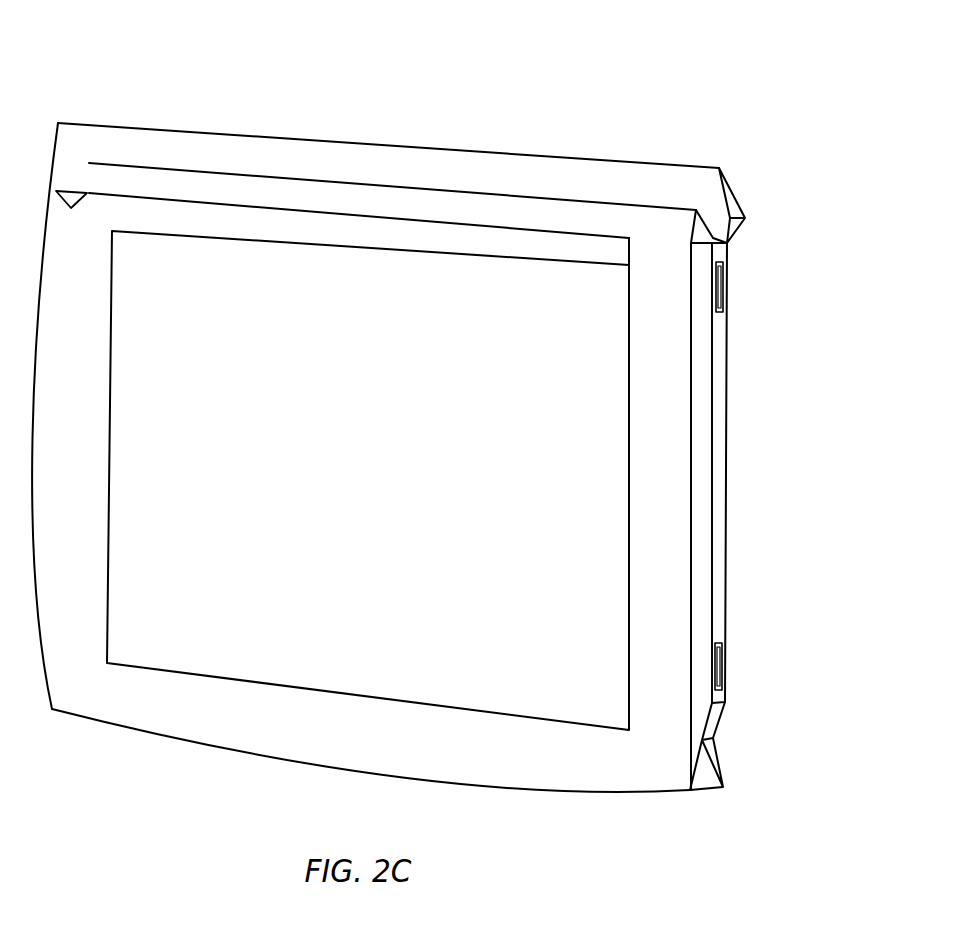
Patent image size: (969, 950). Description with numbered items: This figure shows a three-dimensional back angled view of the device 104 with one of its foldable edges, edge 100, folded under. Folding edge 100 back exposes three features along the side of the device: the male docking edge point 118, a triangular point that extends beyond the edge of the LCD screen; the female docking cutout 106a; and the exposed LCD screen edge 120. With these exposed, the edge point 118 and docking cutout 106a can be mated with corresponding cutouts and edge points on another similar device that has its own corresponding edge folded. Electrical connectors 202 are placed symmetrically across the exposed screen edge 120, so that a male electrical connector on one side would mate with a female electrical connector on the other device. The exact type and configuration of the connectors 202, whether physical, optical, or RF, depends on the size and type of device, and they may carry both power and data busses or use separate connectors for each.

The display screen assembly 104 is at (244, 98).
The male docking edge point 118 is at (762, 227).
The LCD screen edge 120 is at (743, 435).
The foldable edge 100 is at (703, 561).
The electrical connectors 202 is at (723, 282).
The female docking cutout 106a is at (745, 751).